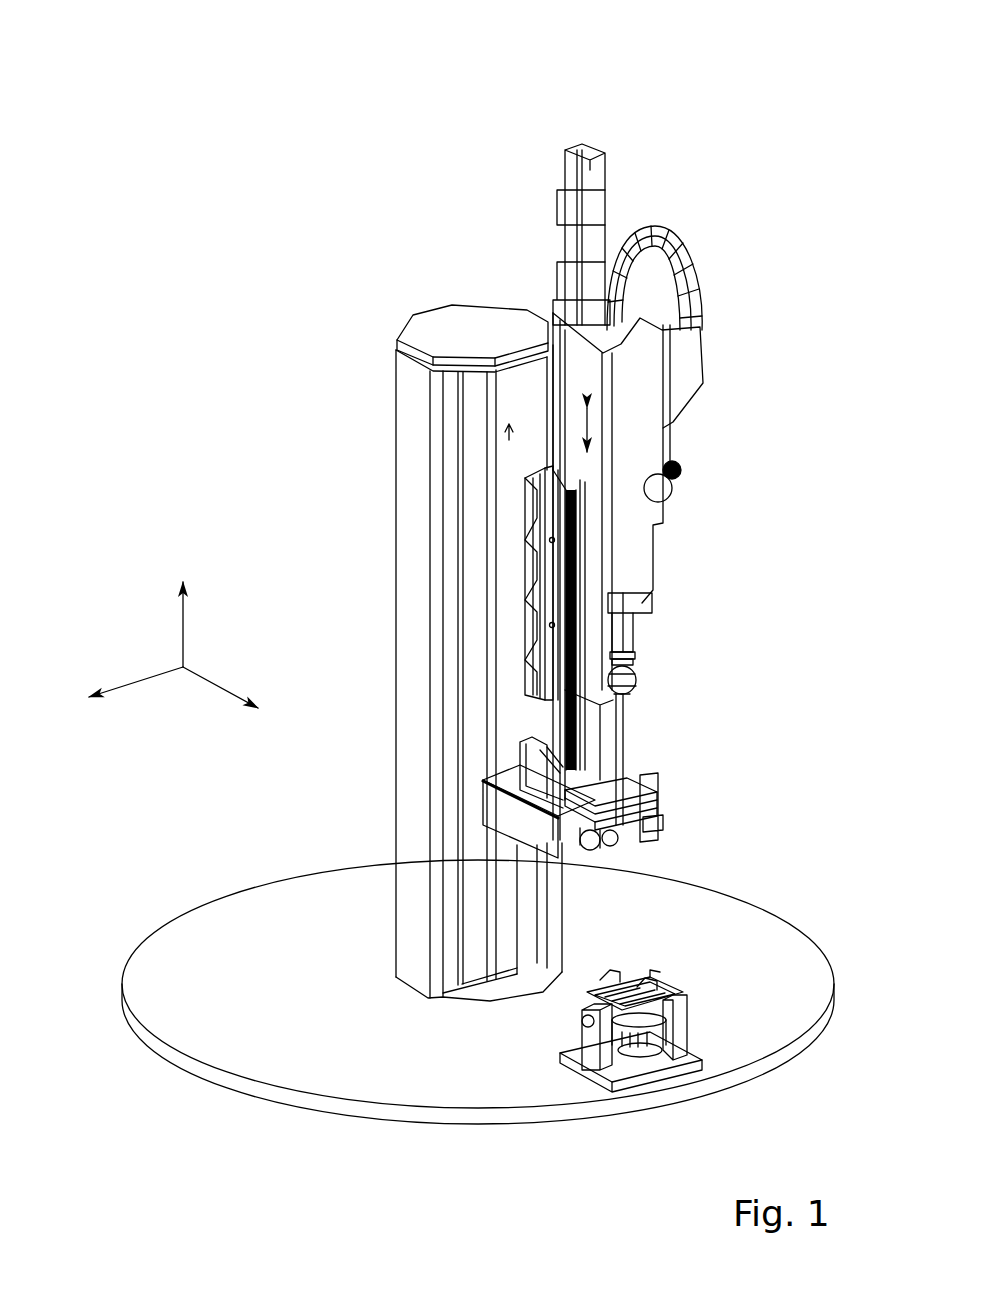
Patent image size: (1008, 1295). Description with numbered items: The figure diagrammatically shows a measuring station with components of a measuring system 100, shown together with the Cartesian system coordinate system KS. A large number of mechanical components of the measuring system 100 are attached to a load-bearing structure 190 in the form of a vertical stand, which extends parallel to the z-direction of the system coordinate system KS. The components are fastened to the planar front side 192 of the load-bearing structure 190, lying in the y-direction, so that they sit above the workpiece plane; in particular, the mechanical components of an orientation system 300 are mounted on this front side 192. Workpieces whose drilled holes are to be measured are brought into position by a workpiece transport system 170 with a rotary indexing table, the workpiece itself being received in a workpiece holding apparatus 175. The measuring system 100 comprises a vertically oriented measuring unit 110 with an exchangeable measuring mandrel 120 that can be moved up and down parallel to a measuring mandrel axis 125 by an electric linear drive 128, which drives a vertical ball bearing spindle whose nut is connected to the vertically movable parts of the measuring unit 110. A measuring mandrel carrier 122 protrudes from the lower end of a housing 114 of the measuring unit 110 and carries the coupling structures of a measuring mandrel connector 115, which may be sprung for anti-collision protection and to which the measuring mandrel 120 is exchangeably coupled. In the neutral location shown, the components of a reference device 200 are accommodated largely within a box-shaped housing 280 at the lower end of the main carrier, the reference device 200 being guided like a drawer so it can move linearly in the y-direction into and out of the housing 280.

The measuring system 100 is at (757, 97).
The measuring unit 110 is at (672, 435).
The housing 114 is at (650, 441).
The measuring mandrel connector 115 is at (638, 681).
The measuring mandrel 120 is at (626, 738).
The measuring mandrel carrier 122 is at (630, 620).
The measuring mandrel axis 125 is at (634, 645).
The linear drive 128 is at (608, 183).
The workpiece transport system 170 is at (802, 906).
The workpiece holding apparatus 175 is at (683, 1030).
The load-bearing structure 190 is at (430, 299).
The front side 192 is at (503, 434).
The reference device 200 is at (633, 855).
The housing 280 is at (500, 812).
The orientation system 300 is at (513, 594).
The system coordinate system KS is at (136, 637).